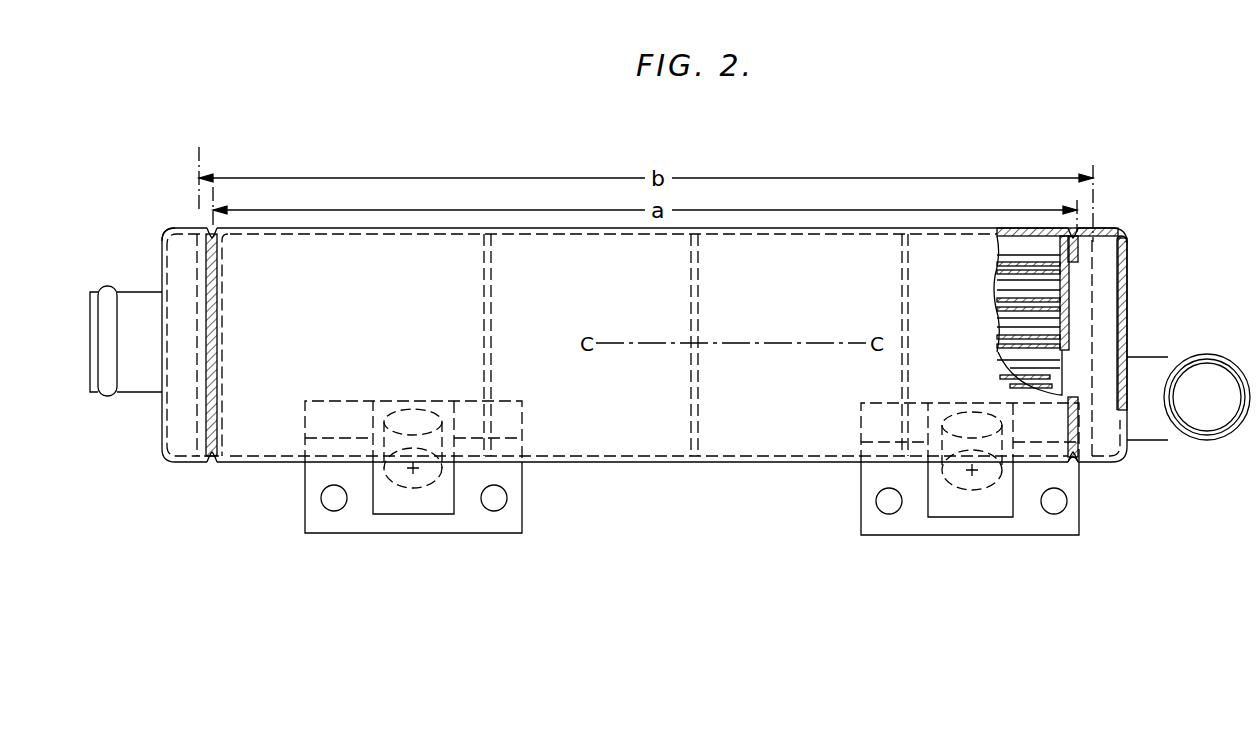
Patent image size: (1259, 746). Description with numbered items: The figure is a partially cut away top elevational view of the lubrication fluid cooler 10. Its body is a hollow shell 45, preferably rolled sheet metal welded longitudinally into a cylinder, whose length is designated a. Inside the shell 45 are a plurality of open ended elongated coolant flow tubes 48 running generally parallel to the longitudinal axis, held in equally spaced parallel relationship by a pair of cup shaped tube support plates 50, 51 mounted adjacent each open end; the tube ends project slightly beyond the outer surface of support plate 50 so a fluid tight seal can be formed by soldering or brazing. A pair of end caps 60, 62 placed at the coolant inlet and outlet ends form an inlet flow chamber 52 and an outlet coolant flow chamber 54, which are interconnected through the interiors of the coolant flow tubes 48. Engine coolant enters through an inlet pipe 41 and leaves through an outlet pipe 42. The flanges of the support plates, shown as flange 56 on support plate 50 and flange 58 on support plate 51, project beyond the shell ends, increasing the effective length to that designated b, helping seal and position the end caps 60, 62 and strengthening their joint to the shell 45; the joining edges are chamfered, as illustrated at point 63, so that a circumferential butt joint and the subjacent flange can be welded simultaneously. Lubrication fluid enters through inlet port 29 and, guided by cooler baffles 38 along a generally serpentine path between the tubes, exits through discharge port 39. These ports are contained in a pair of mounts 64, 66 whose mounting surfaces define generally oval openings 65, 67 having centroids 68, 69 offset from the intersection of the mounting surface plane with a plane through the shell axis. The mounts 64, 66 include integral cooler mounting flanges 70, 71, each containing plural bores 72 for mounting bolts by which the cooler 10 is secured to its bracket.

The cooler 10 is at (676, 470).
The inlet port 29 is at (963, 417).
The cooler baffles 38 is at (497, 352).
The discharge port 39 is at (405, 418).
The inlet pipe 41 is at (129, 300).
The outlet pipe 42 is at (1203, 370).
The hollow shell 45 is at (810, 422).
The coolant flow tubes 48 is at (1065, 285).
The tube support plate 50 is at (1076, 258).
The tube support plate 51 is at (231, 283).
The inlet flow chamber 52 is at (173, 422).
The outlet coolant flow chamber 54 is at (1110, 352).
The flange 56 is at (1085, 240).
The flange 58 is at (203, 460).
The end cap 60 is at (162, 242).
The end cap 62 is at (1130, 330).
The chamfered point 63 is at (1078, 463).
The mount 64 is at (1000, 520).
The opening 65 is at (972, 470).
The mount 66 is at (428, 505).
The opening 67 is at (413, 468).
The centroid 68 is at (972, 470).
The centroid 69 is at (413, 468).
The cooler mounting flange 70 is at (895, 525).
The cooler mounting flange 71 is at (481, 525).
The bores 72 is at (322, 498).